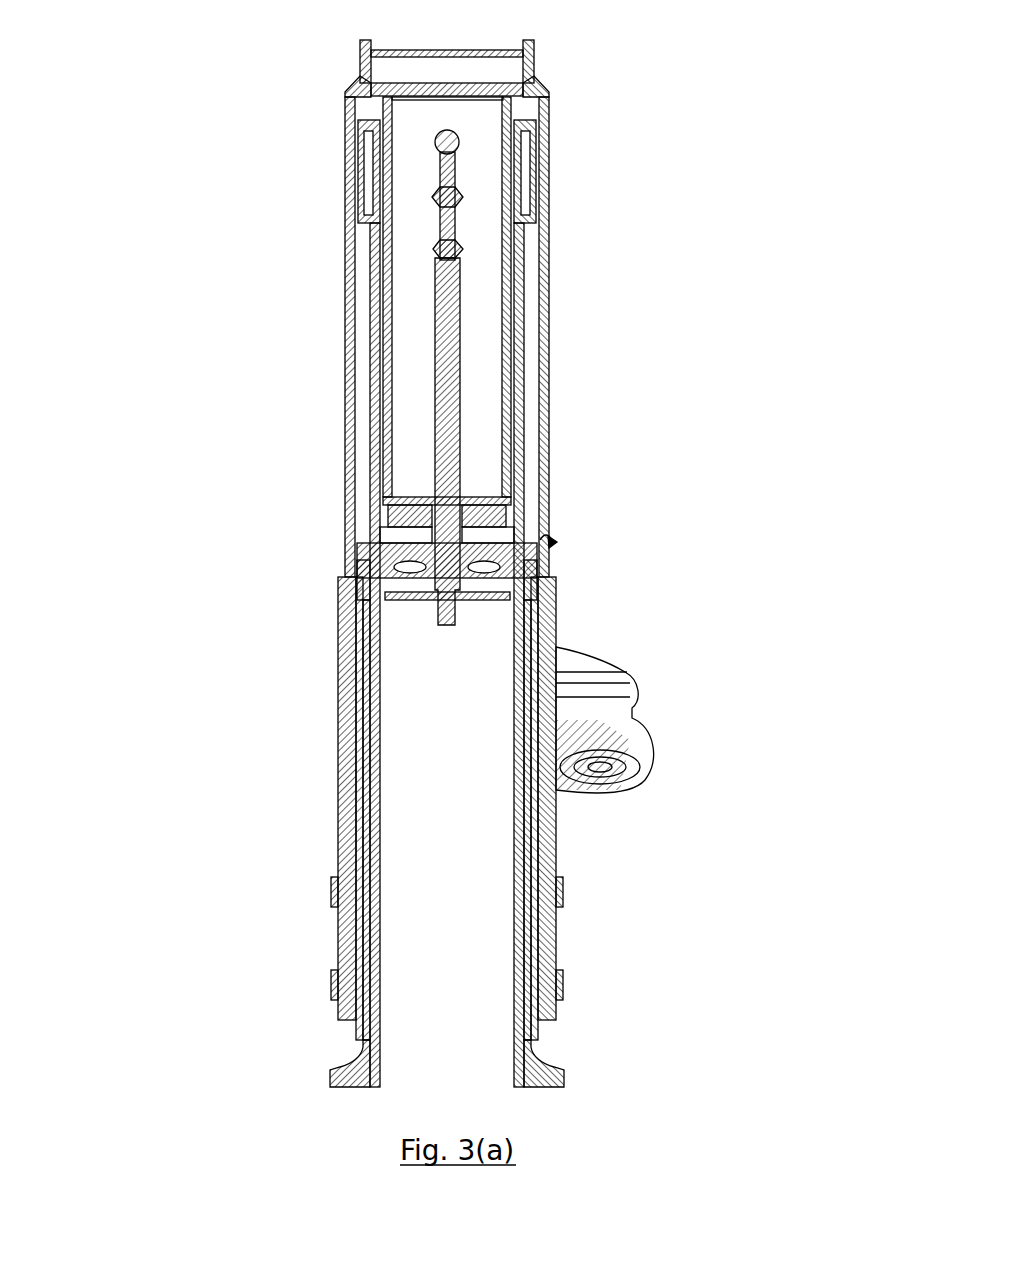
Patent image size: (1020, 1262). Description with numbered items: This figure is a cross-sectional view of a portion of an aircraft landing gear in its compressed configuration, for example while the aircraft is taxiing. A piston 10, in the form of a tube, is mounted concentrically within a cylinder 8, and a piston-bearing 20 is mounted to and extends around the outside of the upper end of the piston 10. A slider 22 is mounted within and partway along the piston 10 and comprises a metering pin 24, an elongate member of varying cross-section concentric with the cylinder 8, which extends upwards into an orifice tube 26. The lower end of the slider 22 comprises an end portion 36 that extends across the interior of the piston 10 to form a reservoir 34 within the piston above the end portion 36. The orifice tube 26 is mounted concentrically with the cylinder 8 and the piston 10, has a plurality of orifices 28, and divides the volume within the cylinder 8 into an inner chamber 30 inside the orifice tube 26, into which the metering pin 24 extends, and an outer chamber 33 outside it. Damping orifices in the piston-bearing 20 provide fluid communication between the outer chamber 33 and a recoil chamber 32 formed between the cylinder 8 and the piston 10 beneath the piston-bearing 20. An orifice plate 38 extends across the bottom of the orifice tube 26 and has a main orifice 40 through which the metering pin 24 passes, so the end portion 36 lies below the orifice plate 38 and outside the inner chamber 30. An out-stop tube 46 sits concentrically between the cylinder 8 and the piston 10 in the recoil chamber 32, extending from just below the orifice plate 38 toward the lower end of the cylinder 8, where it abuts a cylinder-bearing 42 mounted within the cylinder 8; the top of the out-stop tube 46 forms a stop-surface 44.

The cylinder 8 is at (550, 420).
The piston 10 is at (517, 943).
The piston-bearing 20 is at (353, 190).
The slider 22 is at (448, 427).
The metering pin 24 is at (447, 307).
The orifice tube 26 is at (508, 306).
The orifices 28 is at (455, 138).
The inner chamber 30 is at (402, 399).
The recoil chamber 32 is at (360, 522).
The outer chamber 33 is at (367, 108).
The reservoir 34 is at (490, 536).
The end portion 36 is at (410, 542).
The orifice plate 38 is at (398, 517).
The main orifice 40 is at (470, 522).
The cylinder-bearing 42 is at (348, 945).
The stop-surface 44 is at (552, 540).
The out-stop tube 46 is at (355, 692).